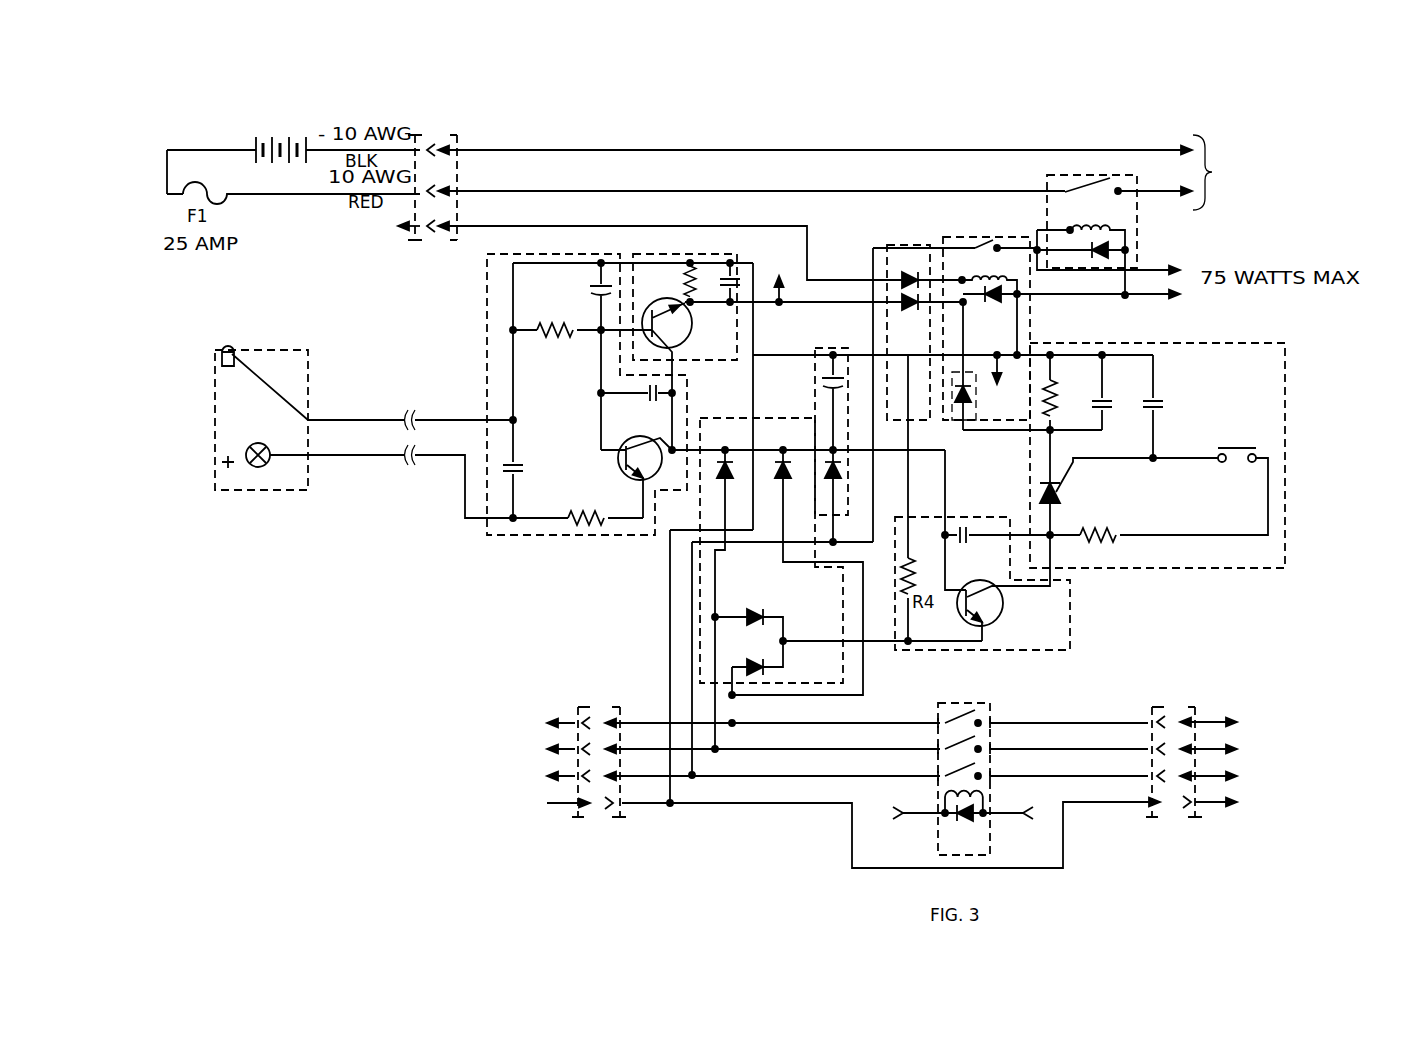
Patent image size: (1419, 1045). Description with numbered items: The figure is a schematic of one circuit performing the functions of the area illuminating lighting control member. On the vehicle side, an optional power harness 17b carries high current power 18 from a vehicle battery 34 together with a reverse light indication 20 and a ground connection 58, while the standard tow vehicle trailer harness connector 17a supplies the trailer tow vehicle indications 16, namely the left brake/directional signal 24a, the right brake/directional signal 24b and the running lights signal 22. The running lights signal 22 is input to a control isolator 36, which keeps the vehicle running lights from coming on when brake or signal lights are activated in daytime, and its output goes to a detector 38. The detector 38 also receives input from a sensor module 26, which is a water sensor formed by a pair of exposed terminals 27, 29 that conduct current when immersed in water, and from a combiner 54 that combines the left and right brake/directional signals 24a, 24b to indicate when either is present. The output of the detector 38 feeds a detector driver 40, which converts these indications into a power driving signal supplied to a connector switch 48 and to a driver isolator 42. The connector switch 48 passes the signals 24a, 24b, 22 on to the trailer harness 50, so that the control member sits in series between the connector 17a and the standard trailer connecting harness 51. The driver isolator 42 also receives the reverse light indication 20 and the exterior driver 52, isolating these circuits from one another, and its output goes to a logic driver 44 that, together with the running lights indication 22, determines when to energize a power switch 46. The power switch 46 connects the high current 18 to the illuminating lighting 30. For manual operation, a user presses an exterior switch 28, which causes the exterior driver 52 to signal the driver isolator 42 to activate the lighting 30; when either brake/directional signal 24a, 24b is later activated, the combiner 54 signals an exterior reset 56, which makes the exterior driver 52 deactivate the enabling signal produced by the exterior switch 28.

The vehicle battery 34 is at (247, 130).
The reverse light indication 20 is at (327, 270).
The optional power harness 17b is at (413, 245).
The ground connection 58 is at (610, 150).
The source of high current power 18 is at (615, 191).
The illuminating lighting 30 is at (1318, 210).
The power switch 46 is at (1137, 220).
The detector driver 40 is at (732, 252).
The detector 38 is at (487, 335).
The sensor module 26 is at (254, 435).
The exposed terminal 27 is at (220, 355).
The exposed terminal 29 is at (246, 462).
The control isolator 36 is at (845, 350).
The driver isolator 42 is at (893, 245).
The logic driver 44 is at (943, 240).
The combiner 54 is at (700, 603).
The exterior reset 56 is at (1075, 620).
The exterior switch 28 is at (1238, 448).
The exterior driver 52 is at (1290, 520).
The right brake/directional signal 24b is at (528, 733).
The left brake/directional signal 24a is at (528, 759).
The running lights signal 22 is at (518, 786).
The tow vehicle trailer harness connector 17a is at (587, 703).
The trailer tow vehicle indications 16 is at (657, 728).
The connector switch 48 is at (990, 703).
The trailer harness 50 is at (1150, 705).
The standard trailer connecting harness 51 is at (1193, 705).